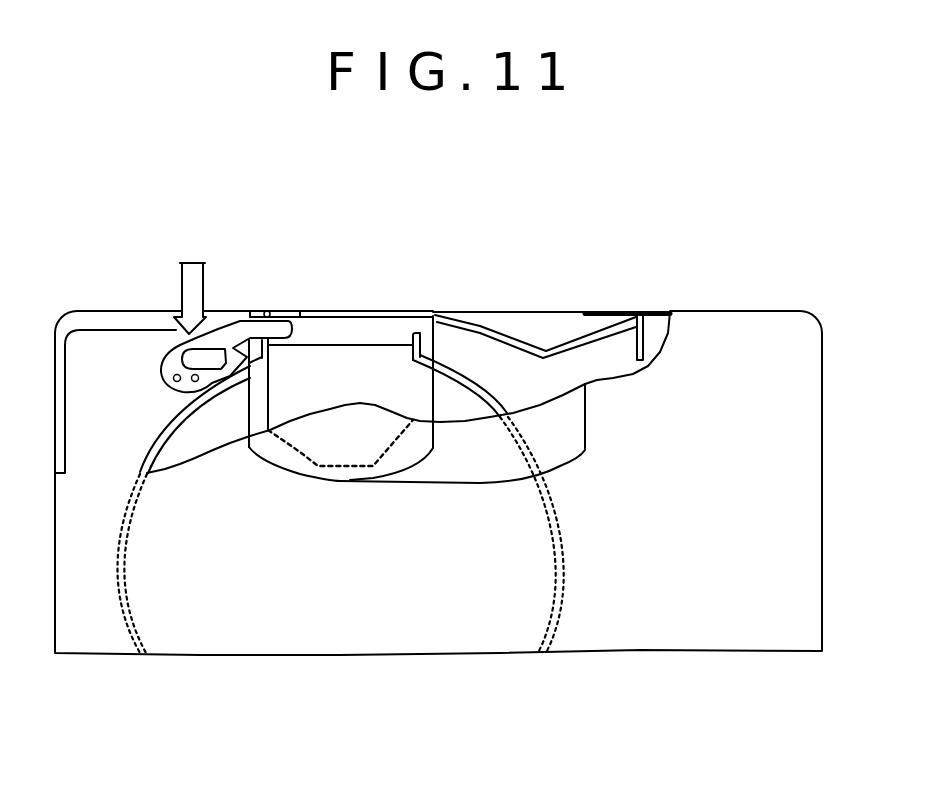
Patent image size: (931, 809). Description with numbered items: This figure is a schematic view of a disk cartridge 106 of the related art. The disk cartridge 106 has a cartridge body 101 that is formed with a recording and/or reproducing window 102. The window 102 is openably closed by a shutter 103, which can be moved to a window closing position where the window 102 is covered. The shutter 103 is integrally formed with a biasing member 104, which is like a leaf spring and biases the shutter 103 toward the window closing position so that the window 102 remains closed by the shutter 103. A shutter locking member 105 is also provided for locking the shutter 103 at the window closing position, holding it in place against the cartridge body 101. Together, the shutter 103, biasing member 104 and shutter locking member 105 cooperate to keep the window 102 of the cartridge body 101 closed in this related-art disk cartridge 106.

The cartridge body 101 is at (93, 654).
The recording and/or reproducing window 102 is at (300, 468).
The shutter 103 is at (395, 460).
The biasing member 104 is at (525, 327).
The shutter locking member 105 is at (220, 334).
The disk cartridge 106 is at (696, 284).